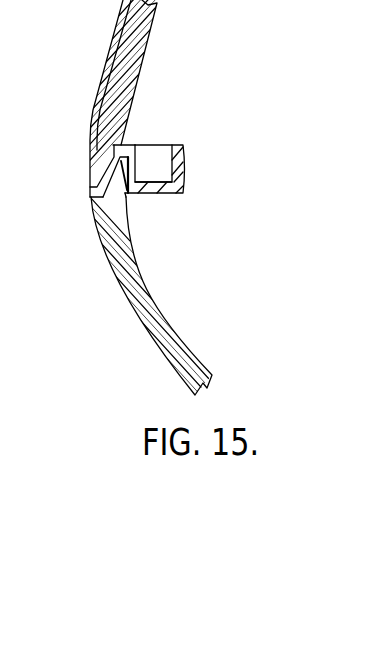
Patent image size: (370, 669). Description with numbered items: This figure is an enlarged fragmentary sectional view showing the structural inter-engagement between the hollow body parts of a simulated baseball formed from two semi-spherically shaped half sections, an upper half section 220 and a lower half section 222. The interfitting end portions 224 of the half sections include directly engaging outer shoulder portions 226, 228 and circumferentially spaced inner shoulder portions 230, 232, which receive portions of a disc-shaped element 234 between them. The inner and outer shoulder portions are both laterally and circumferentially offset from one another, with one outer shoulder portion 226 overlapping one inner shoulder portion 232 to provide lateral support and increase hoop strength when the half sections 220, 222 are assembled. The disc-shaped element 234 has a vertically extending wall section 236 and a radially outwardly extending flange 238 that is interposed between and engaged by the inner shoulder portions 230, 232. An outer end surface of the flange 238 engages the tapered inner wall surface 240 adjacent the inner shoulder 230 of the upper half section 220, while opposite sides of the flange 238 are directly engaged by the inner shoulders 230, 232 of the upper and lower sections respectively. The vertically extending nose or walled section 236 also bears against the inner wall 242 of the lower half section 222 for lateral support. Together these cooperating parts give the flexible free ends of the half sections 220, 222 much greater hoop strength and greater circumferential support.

The upper half section 220 is at (120, 65).
The lower half section 222 is at (167, 366).
The interfitting end portions 224 is at (74, 190).
The outer shoulder portion 226 is at (92, 183).
The outer shoulder portion 228 is at (102, 202).
The inner shoulder portion 230 is at (122, 146).
The inner shoulder portion 232 is at (127, 196).
The disc-shaped element 234 is at (160, 185).
The vertically extending wall section 236 is at (136, 181).
The radially outwardly extending flange 238 is at (132, 152).
The tapered inner wall surface 240 is at (92, 118).
The inner wall 242 is at (143, 267).